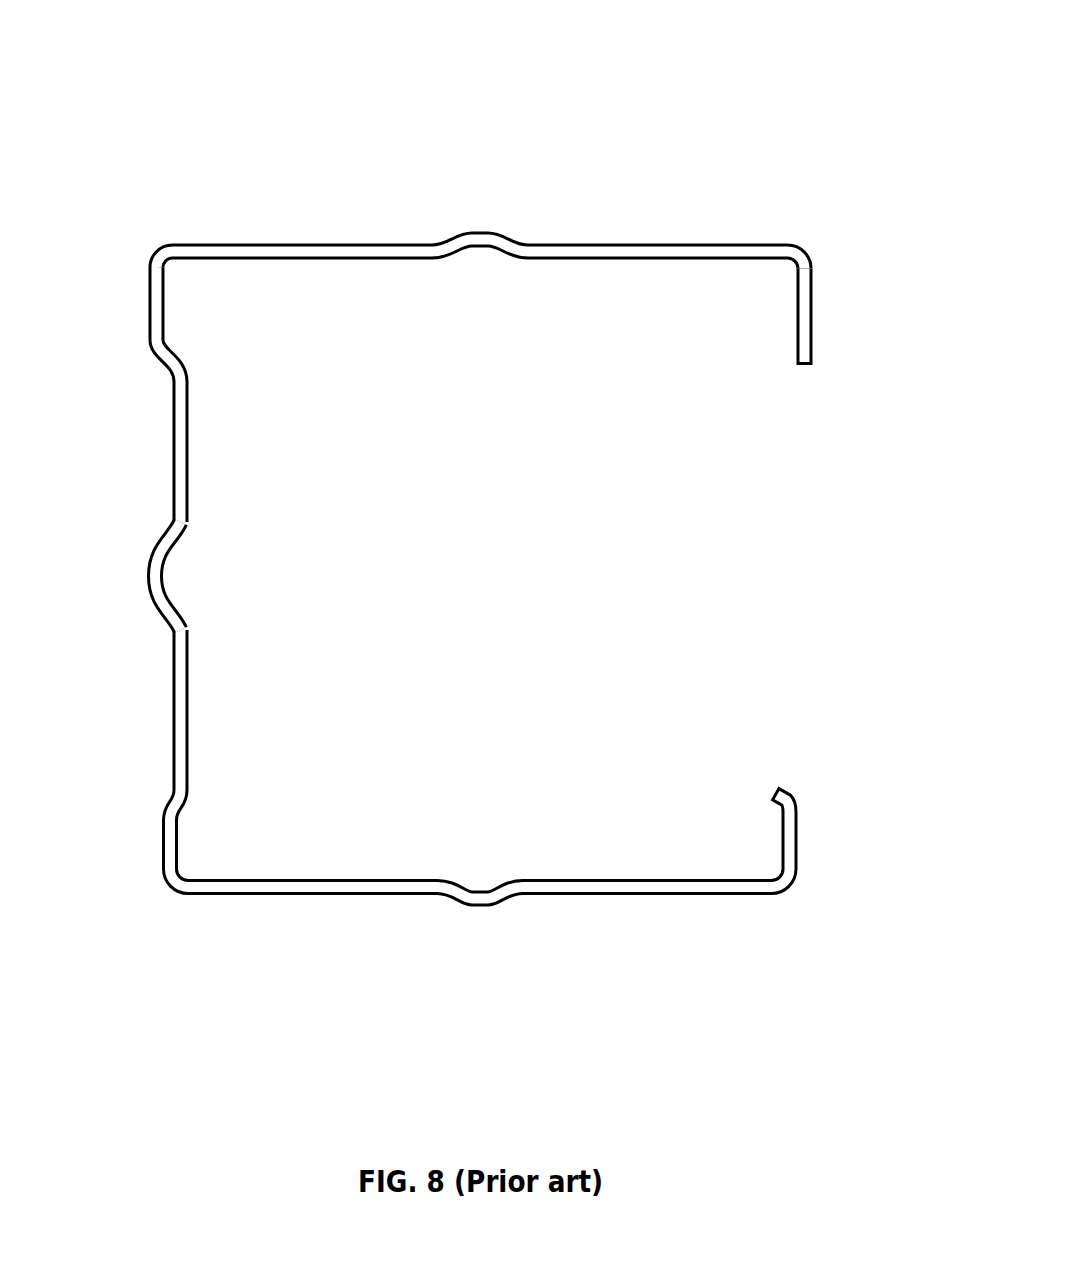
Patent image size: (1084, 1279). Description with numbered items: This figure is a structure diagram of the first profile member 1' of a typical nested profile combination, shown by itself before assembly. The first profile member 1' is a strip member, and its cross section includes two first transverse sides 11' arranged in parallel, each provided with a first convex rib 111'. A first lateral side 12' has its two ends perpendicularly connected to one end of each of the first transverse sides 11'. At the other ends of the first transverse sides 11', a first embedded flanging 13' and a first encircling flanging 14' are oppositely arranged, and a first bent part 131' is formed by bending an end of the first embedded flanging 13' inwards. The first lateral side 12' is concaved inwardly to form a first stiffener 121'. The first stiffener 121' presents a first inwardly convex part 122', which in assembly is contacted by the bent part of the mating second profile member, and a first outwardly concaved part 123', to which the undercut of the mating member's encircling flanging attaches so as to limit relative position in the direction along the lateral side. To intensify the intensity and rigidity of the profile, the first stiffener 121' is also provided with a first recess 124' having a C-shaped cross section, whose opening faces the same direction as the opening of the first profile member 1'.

The first profile member 1' is at (497, 536).
The first transverse sides 11' is at (480, 567).
The first convex ribs 111' is at (493, 567).
The first lateral side 12' is at (246, 571).
The first stiffener 121' is at (305, 588).
The first inwardly convex part 122' is at (271, 601).
The first outwardly concaved part 123' is at (113, 568).
The first recess 124' is at (277, 584).
The first embedded flanging 13' is at (848, 787).
The first bent part 131' is at (835, 743).
The first encircling flanging 14' is at (870, 317).